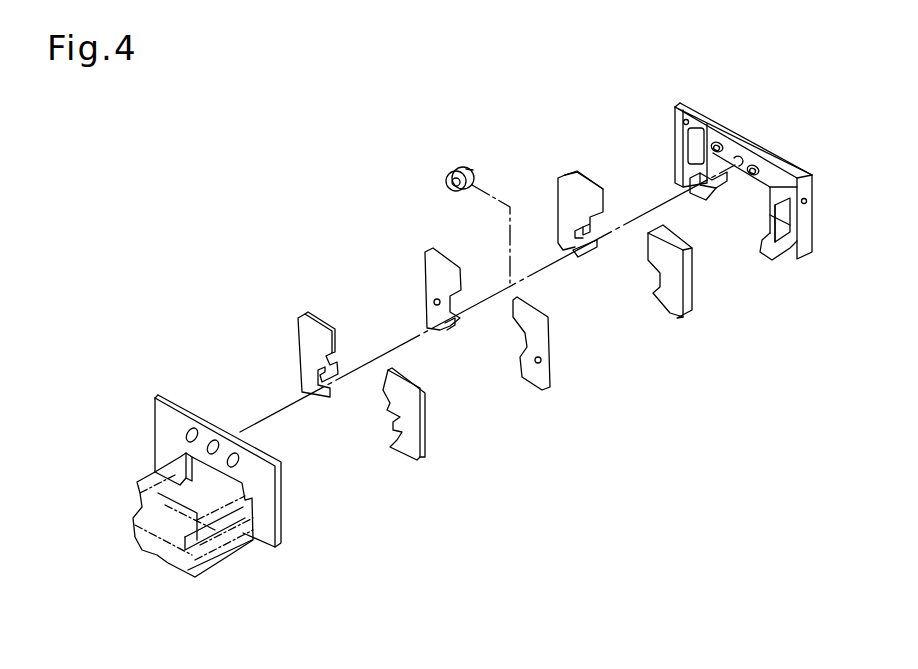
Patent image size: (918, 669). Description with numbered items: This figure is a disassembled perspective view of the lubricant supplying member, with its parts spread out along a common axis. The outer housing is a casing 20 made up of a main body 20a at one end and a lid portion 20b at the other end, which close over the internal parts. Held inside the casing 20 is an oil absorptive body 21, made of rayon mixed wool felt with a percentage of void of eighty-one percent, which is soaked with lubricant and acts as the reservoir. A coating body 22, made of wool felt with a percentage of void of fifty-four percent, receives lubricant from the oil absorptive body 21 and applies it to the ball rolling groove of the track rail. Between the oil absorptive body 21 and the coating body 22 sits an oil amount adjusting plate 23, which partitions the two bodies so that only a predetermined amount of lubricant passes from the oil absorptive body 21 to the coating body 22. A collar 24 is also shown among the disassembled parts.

The casing 20 is at (477, 310).
The main body 20a is at (727, 108).
The lid portion 20b is at (163, 397).
The oil absorptive body 21 is at (574, 170).
The coating body 22 is at (312, 326).
The oil amount adjusting plate 23 is at (430, 260).
The collar 24 is at (470, 168).